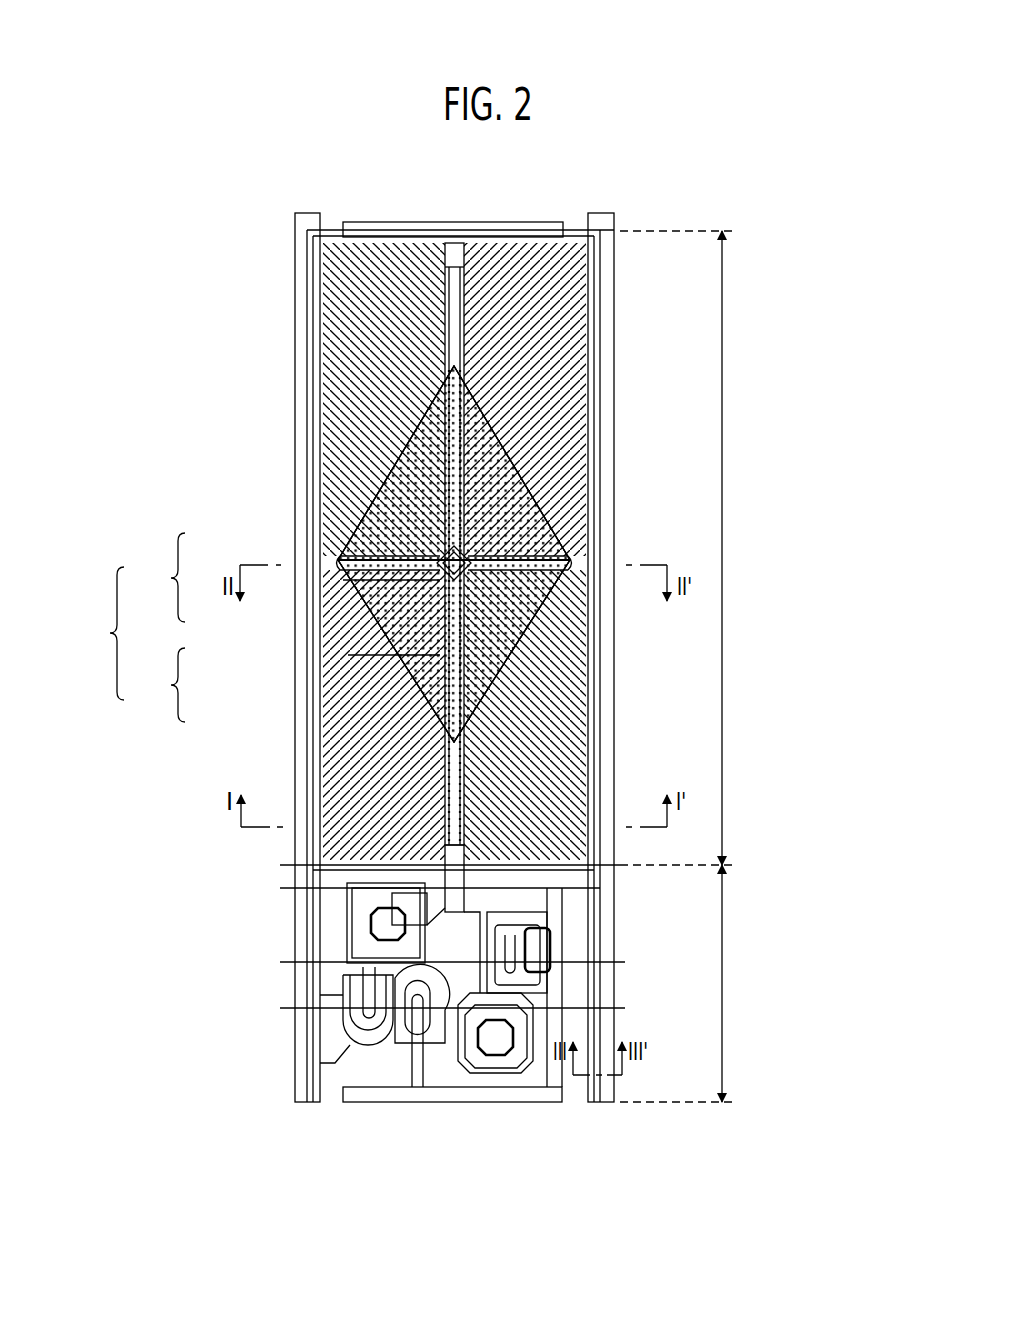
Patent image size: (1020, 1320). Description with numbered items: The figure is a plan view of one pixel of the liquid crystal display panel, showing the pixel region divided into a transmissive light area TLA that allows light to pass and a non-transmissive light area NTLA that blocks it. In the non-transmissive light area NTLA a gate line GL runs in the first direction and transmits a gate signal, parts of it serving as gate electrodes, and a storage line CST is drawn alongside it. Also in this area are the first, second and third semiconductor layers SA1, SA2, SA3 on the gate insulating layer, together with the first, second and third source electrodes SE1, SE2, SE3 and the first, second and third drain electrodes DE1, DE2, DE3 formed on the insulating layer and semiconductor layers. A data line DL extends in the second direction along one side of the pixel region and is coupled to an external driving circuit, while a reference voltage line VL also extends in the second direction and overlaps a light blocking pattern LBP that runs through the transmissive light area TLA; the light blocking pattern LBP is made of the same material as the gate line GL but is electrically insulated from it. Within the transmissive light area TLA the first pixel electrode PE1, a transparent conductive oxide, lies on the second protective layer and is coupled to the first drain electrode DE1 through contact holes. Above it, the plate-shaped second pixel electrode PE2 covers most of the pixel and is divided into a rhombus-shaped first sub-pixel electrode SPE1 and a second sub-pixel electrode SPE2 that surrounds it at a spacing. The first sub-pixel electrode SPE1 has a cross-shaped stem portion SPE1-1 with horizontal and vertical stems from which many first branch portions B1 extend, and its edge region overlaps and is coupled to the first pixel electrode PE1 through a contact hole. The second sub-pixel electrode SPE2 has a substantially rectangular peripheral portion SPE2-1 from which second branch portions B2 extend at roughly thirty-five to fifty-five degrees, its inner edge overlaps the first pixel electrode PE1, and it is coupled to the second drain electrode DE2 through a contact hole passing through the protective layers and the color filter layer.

The data line DL is at (295, 350).
The reference voltage line VL is at (455, 222).
The light blocking pattern LBP is at (464, 326).
The first pixel electrode PE1 is at (530, 433).
The second pixel electrode PE2 is at (324, 554).
The first sub-pixel electrode SPE1 is at (349, 494).
The cross-shaped stem portion SPE1-1 is at (345, 538).
The first branch portions B1 is at (343, 580).
The second sub-pixel electrode SPE2 is at (347, 651).
The peripheral portion SPE2-1 is at (318, 692).
The second branch portions B2 is at (348, 655).
The transmissive light area TLA is at (691, 548).
The non-transmissive light area NTLA is at (696, 983).
The storage line CST is at (612, 876).
The gate line GL is at (612, 1005).
The first drain electrode DE1 is at (365, 932).
The first semiconductor layer SA1 is at (357, 997).
The first source electrode SE1 is at (345, 1012).
The second source electrode SE2 is at (393, 1017).
The second semiconductor layer SA2 is at (407, 1022).
The second drain electrode DE2 is at (418, 1022).
The third drain electrode DE3 is at (485, 940).
The third semiconductor layer SA3 is at (495, 958).
The third source electrode SE3 is at (530, 970).